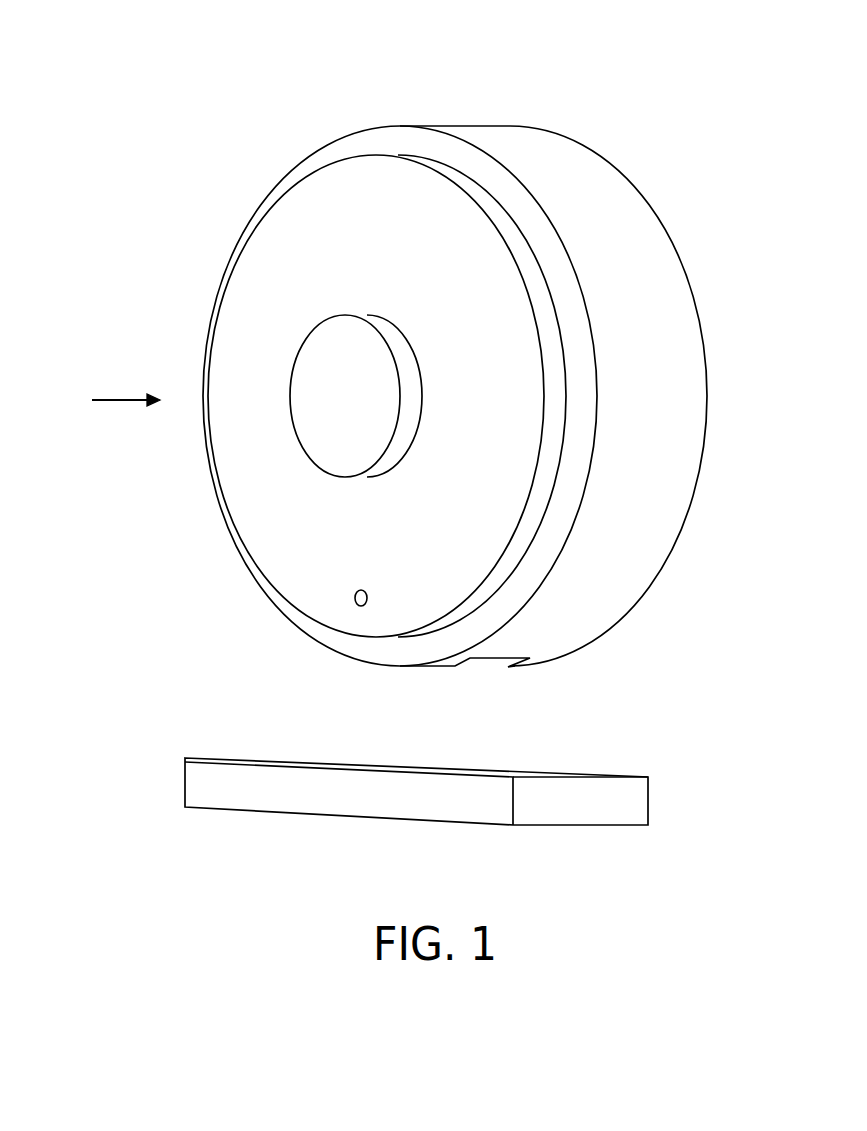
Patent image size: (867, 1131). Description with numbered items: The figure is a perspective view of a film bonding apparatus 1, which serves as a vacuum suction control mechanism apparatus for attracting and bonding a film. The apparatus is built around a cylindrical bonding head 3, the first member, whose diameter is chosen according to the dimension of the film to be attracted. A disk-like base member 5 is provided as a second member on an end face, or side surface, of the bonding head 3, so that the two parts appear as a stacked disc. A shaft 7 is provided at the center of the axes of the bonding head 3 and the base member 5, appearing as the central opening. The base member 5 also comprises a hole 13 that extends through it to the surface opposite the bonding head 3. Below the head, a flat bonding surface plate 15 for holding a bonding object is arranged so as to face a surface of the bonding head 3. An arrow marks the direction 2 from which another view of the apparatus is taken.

The film bonding apparatus 1 is at (323, 88).
The direction 2 is at (126, 385).
The bonding head 3 is at (567, 155).
The base member 5 is at (376, 193).
The shaft 7 is at (298, 415).
The hole 13 is at (362, 607).
The bonding surface plate 15 is at (627, 788).